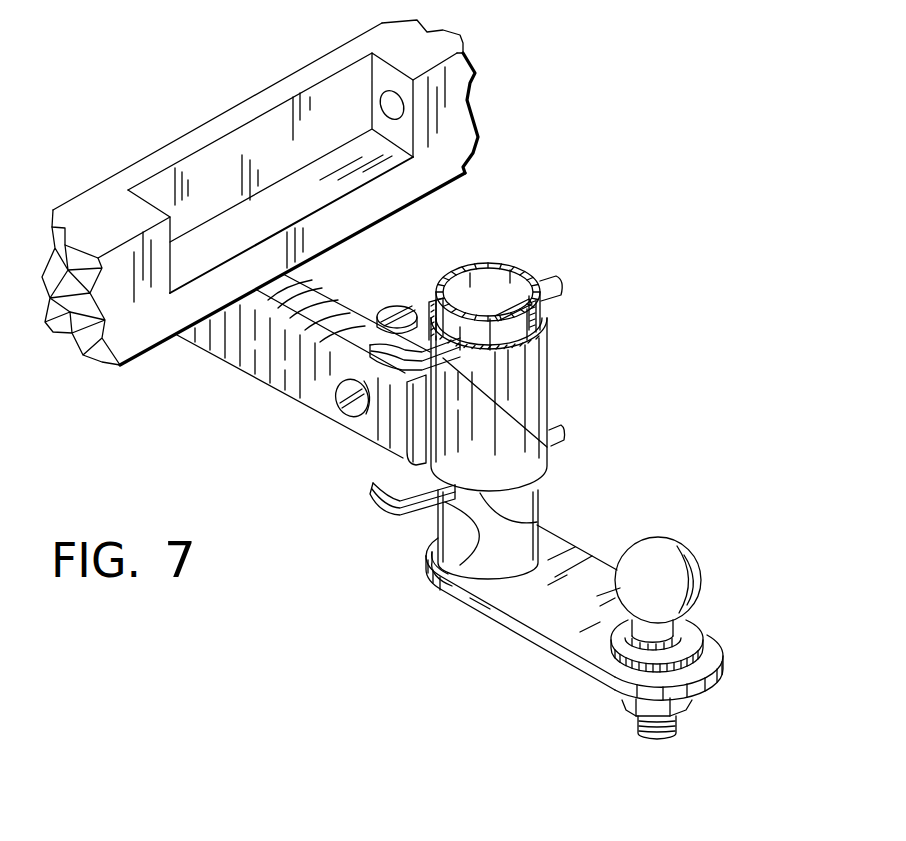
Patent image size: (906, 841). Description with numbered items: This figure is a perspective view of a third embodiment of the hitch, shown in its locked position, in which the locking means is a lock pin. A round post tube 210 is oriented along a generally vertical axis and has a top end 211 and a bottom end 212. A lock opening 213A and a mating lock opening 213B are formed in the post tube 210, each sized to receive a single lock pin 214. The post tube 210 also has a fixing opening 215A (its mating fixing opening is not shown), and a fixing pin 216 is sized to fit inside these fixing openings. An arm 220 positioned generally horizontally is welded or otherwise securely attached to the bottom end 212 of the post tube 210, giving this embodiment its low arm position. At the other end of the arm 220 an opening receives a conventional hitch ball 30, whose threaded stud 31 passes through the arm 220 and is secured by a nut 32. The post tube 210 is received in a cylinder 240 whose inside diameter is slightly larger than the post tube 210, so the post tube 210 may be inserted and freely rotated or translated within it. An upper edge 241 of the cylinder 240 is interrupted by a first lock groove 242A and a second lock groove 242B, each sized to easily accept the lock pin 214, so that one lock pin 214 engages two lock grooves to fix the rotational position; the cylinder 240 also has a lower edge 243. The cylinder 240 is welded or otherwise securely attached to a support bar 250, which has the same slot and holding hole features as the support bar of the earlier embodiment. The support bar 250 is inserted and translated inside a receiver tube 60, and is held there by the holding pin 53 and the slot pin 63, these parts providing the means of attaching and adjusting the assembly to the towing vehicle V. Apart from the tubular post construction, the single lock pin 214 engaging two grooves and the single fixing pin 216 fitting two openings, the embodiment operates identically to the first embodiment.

The towing vehicle V is at (455, 110).
The receiver tube 60 is at (233, 370).
The holding pin 53 is at (340, 413).
The slot pin 63 is at (412, 302).
The support bar 250 is at (405, 452).
The fixing pin 216 is at (380, 506).
The top end 211 is at (528, 275).
The lock opening 213A is at (440, 300).
The mating lock opening 213B is at (508, 300).
The lock pin 214 is at (562, 286).
The second lock groove 242B is at (548, 308).
The upper edge 241 is at (553, 352).
The cylinder 240 is at (552, 405).
The first lock groove 242A is at (550, 447).
The post tube 210 is at (540, 498).
The lower edge 243 is at (538, 522).
The fixing opening 215A is at (464, 570).
The arm 220 is at (527, 640).
The bottom end 212 is at (428, 552).
The hitch ball 30 is at (675, 540).
The nut 32 is at (692, 707).
The threaded stud 31 is at (677, 733).